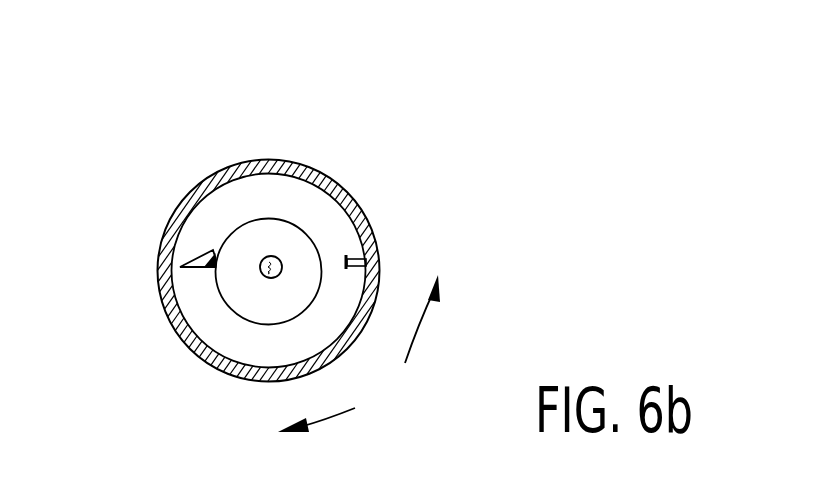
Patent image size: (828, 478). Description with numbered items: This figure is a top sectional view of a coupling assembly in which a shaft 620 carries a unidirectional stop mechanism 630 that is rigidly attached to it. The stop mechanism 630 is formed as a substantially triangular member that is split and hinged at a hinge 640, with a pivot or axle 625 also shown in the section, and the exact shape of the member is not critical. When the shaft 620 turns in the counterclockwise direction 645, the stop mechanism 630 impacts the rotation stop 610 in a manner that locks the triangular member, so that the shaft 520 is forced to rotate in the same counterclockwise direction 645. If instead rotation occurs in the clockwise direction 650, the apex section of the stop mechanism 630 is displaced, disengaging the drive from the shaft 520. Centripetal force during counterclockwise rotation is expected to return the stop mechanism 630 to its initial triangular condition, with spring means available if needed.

The shaft 520 is at (353, 197).
The rotation stop 610 is at (353, 249).
The shaft 620 is at (252, 283).
The pivot / axle 625 is at (273, 257).
The unidirectional stop mechanism 630 is at (213, 250).
The hinge 640 is at (206, 269).
The counterclockwise direction 645 is at (451, 319).
The clockwise direction 650 is at (283, 428).